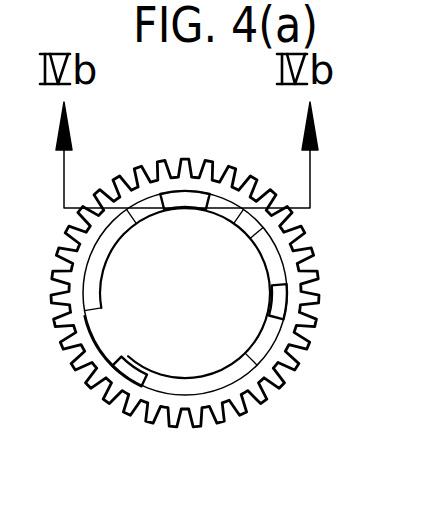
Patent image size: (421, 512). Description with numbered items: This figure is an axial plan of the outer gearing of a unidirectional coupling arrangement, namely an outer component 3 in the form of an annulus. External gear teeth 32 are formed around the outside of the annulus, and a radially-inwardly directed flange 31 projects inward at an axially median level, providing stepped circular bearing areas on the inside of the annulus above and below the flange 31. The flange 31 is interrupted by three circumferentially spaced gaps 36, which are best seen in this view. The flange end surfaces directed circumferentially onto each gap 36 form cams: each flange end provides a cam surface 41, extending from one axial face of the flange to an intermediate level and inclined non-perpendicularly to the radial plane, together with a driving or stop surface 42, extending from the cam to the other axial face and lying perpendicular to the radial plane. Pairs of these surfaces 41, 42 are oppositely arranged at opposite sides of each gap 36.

The outer component 3 is at (161, 152).
The radially-inwardly directed flange 31 is at (238, 405).
The external gear teeth 32 is at (305, 352).
The gaps 36 is at (105, 352).
The cam surface 41 is at (126, 380).
The driving or stop surface 42 is at (308, 299).